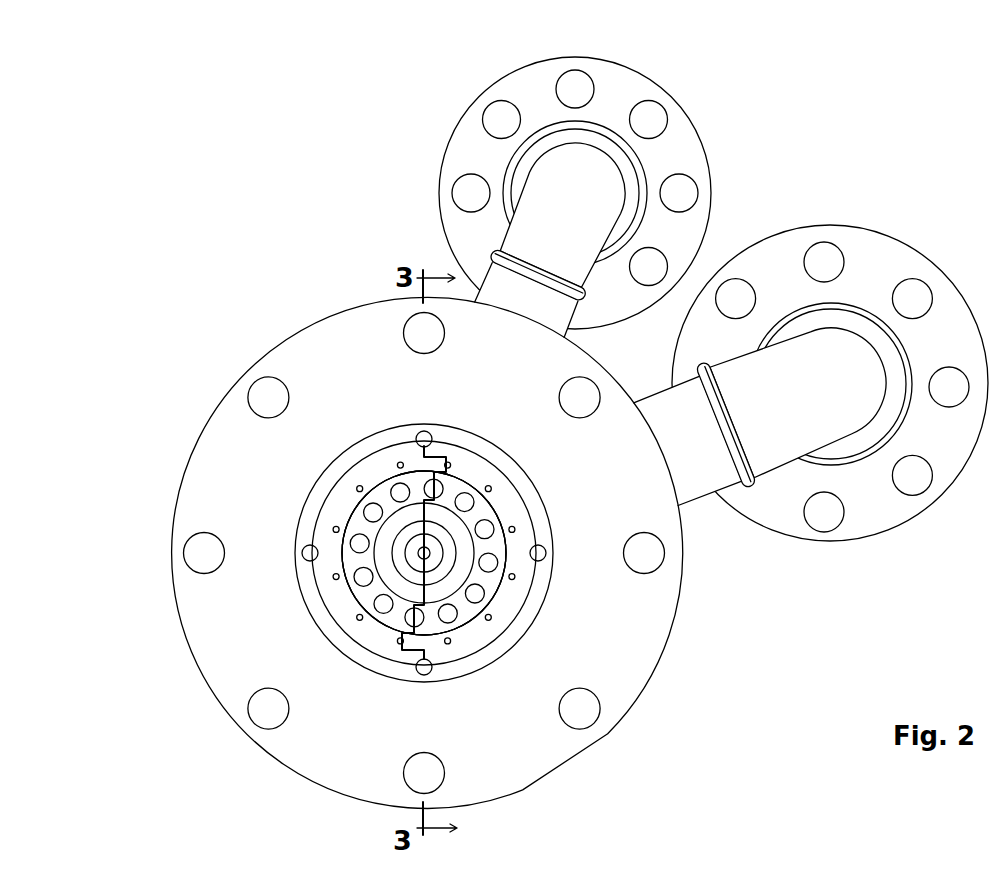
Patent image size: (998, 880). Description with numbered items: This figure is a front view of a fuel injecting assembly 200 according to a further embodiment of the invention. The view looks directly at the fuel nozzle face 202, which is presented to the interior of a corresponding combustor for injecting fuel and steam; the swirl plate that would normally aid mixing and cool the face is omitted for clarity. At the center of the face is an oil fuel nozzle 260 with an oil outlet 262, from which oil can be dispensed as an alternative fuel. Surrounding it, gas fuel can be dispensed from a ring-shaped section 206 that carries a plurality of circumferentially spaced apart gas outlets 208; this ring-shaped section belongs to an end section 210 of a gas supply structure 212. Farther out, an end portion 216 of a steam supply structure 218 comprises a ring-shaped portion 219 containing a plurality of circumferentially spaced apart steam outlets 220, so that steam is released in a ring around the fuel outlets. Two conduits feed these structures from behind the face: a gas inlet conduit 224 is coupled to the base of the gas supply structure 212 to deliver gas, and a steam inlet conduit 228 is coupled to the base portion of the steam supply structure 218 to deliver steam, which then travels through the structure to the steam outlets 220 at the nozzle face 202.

The fuel injecting assembly 200 is at (602, 737).
The fuel nozzle face 202 is at (463, 648).
The ring-shaped section 206 is at (385, 645).
The gas outlets 208 is at (335, 533).
The end section 210 is at (323, 522).
The gas supply structure 212 is at (333, 502).
The end portion 216 is at (489, 588).
The steam supply structure 218 is at (474, 608).
The ring-shaped portion 219 is at (493, 507).
The steam outlets 220 is at (497, 558).
The gas inlet conduit 224 is at (605, 185).
The steam inlet conduit 228 is at (843, 350).
The oil fuel nozzle 260 is at (435, 533).
The oil outlet 262 is at (418, 542).